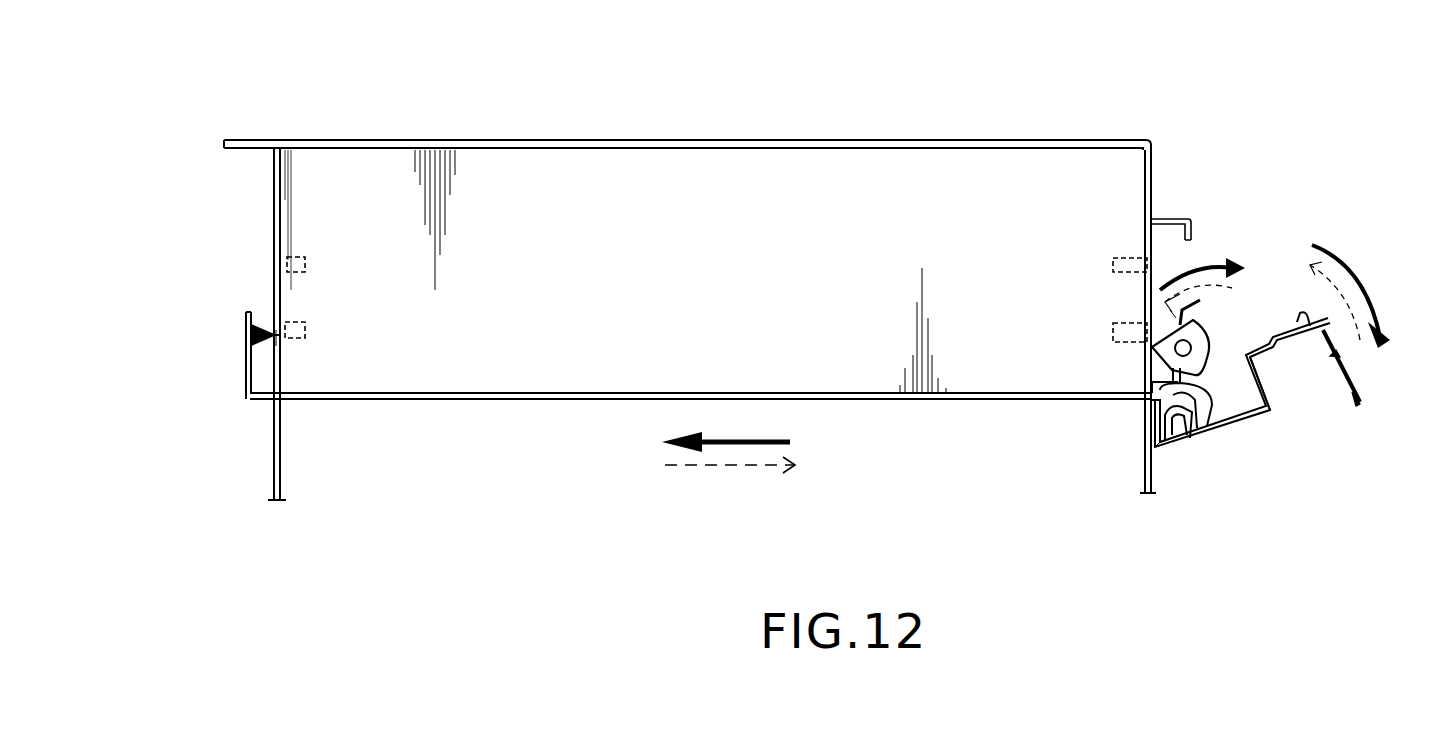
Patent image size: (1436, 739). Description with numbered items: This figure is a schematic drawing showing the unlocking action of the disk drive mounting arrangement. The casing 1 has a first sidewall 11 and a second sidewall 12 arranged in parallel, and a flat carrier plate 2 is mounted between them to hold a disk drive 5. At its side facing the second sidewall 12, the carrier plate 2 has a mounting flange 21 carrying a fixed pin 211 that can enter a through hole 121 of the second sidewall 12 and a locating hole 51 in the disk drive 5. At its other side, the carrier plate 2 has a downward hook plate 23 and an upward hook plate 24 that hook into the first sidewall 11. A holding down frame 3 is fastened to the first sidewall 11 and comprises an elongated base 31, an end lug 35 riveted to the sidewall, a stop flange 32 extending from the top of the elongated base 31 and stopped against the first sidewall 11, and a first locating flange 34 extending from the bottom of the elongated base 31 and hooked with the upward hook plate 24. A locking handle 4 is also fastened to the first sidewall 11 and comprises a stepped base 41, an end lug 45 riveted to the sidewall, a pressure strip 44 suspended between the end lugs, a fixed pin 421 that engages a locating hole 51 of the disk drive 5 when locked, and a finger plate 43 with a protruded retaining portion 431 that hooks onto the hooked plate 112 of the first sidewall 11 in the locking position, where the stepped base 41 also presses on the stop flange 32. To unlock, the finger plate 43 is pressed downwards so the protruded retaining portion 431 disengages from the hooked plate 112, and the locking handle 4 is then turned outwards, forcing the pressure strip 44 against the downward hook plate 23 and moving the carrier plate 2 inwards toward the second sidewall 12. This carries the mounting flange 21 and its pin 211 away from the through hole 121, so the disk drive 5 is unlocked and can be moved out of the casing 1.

The casing 1 is at (790, 140).
The disk drive 5 is at (596, 180).
The first sidewall 11 is at (1152, 158).
The hooked plate 112 is at (1163, 219).
The second sidewall 12 is at (270, 185).
The carrier plate 2 is at (515, 400).
The mounting flange 21 is at (245, 388).
The fixed pin 211 is at (250, 336).
The through hole 121 is at (272, 342).
The locating hole 51 is at (287, 264).
The holding down frame 3 is at (1147, 352).
The elongated base 31 is at (1170, 318).
The stop flange 32 is at (1215, 302).
The end lug 35 is at (1200, 345).
The first locating flange 34 is at (1155, 375).
The upward hook plate 24 is at (1190, 380).
The downward hook plate 23 is at (1150, 415).
The locking handle 4 is at (1240, 432).
The stepped base 41 is at (1255, 420).
The end lug 45 is at (1205, 422).
The pressure strip 44 is at (1150, 440).
The fixed pin 421 is at (1300, 332).
The finger plate 43 is at (1358, 402).
The protruded retaining portion 431 is at (1342, 352).